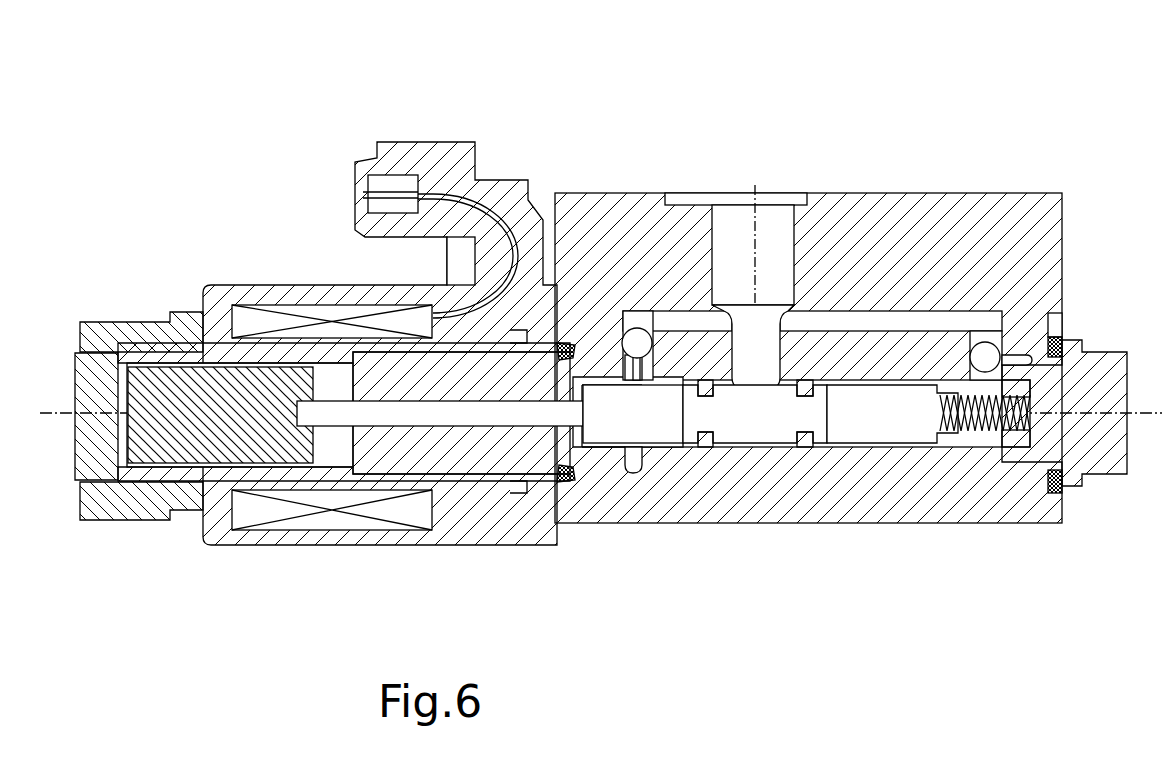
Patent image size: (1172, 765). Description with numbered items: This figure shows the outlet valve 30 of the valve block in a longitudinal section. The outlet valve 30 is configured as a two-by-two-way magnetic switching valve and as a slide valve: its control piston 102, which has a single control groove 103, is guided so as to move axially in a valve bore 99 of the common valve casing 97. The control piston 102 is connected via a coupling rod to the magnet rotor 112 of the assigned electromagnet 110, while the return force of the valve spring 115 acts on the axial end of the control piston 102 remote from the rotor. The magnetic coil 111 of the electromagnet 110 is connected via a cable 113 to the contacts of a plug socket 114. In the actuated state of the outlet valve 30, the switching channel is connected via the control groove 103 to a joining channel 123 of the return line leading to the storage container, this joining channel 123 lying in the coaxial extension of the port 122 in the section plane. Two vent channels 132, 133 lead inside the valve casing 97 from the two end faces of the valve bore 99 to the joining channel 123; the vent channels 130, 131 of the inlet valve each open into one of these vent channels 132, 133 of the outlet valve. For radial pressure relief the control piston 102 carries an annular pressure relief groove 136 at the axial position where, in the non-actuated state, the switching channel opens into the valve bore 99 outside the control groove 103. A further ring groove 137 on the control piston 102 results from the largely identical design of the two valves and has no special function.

The outlet valve 30 is at (179, 135).
The electromagnet 110 is at (258, 170).
The magnetic coil 111 is at (330, 310).
The magnet rotor 112 is at (165, 445).
The cable 113 is at (496, 200).
The plug socket 114 is at (402, 158).
The valve casing 97 is at (938, 235).
The port 122 is at (730, 248).
The joining channel 123 is at (772, 353).
The vent channel 130 is at (630, 327).
The vent channel 131 is at (985, 355).
The vent channel 132 is at (677, 323).
The vent channel 133 is at (860, 320).
The ring groove 137 is at (688, 420).
The control groove 103 is at (760, 420).
The pressure relief groove 136 is at (820, 425).
The control piston 102 is at (885, 423).
The valve bore 99 is at (948, 433).
The valve spring 115 is at (985, 443).